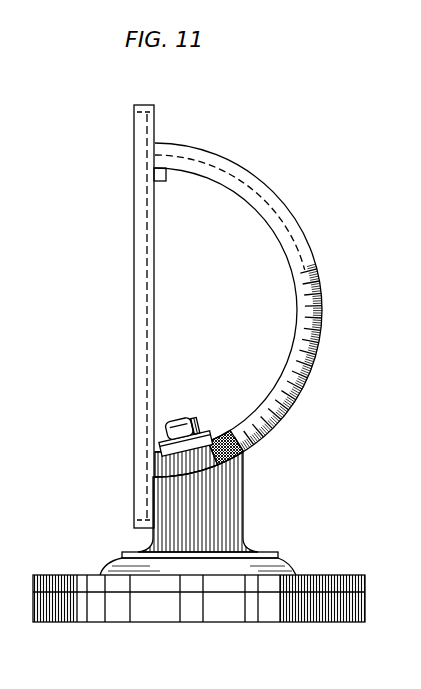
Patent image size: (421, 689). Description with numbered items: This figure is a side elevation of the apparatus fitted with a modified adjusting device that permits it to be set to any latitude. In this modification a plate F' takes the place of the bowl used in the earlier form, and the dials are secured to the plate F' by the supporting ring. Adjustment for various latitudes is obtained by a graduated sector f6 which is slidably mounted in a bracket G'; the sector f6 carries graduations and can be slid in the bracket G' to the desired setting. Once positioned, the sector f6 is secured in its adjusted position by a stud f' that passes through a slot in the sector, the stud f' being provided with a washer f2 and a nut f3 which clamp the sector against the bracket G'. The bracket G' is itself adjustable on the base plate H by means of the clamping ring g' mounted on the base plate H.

The plate F' is at (127, 316).
The stud f' is at (182, 413).
The nut f3 is at (191, 430).
The washer f2 is at (216, 441).
The graduated sector f6 is at (316, 340).
The bracket G' is at (219, 502).
The clamping ring g' is at (211, 556).
The base plate H is at (122, 607).